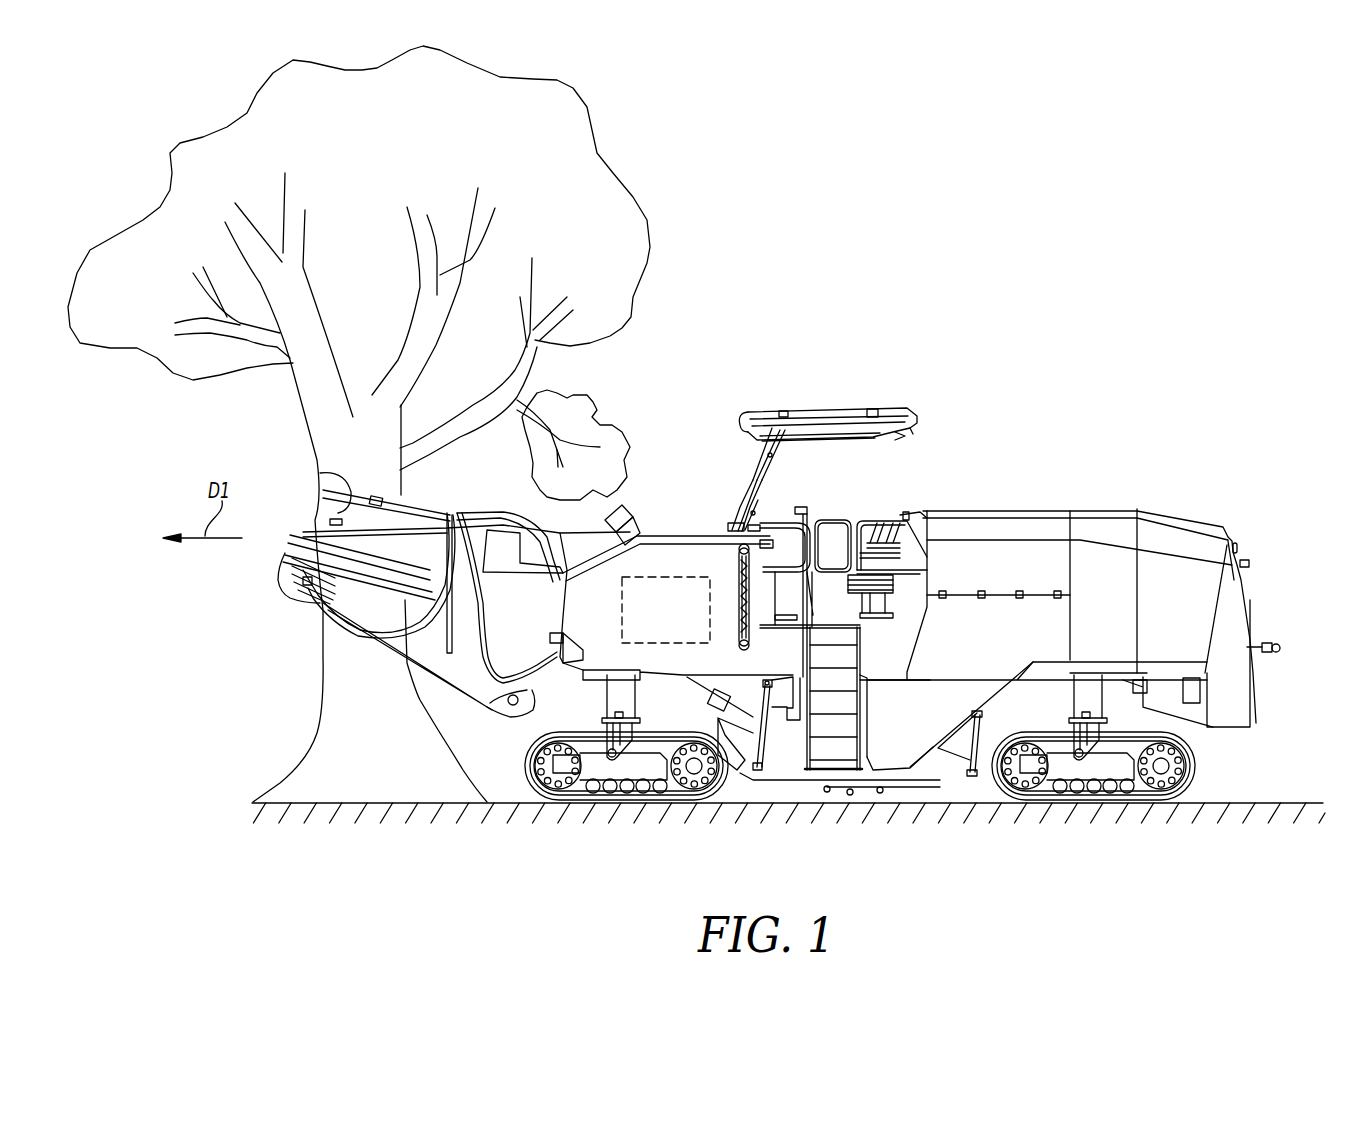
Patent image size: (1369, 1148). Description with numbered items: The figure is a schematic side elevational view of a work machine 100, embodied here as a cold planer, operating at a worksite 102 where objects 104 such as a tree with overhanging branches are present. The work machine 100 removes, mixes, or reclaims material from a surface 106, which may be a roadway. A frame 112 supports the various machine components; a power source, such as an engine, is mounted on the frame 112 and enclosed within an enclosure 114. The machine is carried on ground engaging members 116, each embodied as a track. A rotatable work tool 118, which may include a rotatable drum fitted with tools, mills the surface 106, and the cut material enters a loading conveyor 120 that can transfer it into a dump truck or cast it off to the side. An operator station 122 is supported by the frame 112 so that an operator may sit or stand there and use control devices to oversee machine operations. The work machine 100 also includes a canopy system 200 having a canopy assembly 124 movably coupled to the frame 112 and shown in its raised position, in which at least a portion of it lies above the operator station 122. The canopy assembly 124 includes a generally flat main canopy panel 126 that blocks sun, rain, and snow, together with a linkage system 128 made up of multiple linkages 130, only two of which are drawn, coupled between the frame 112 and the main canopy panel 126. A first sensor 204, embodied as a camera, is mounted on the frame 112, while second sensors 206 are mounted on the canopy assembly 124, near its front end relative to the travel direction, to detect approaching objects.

The work machine 100 is at (1138, 485).
The worksite 102 is at (1168, 246).
The objects 104 is at (683, 173).
The surface 106 is at (1286, 803).
The frame 112 is at (587, 657).
The enclosure 114 is at (1117, 583).
The ground engaging members 116 is at (607, 770).
The rotatable work tool 118 is at (838, 793).
The loading conveyor 120 is at (353, 603).
The operator station 122 is at (880, 504).
The canopy assembly 124 is at (925, 404).
The main canopy panel 126 is at (743, 420).
The linkage system 128 is at (782, 463).
The linkages 130 is at (760, 493).
The canopy system 200 is at (846, 386).
The first sensor 204 is at (647, 523).
The second sensors 206 is at (783, 411).